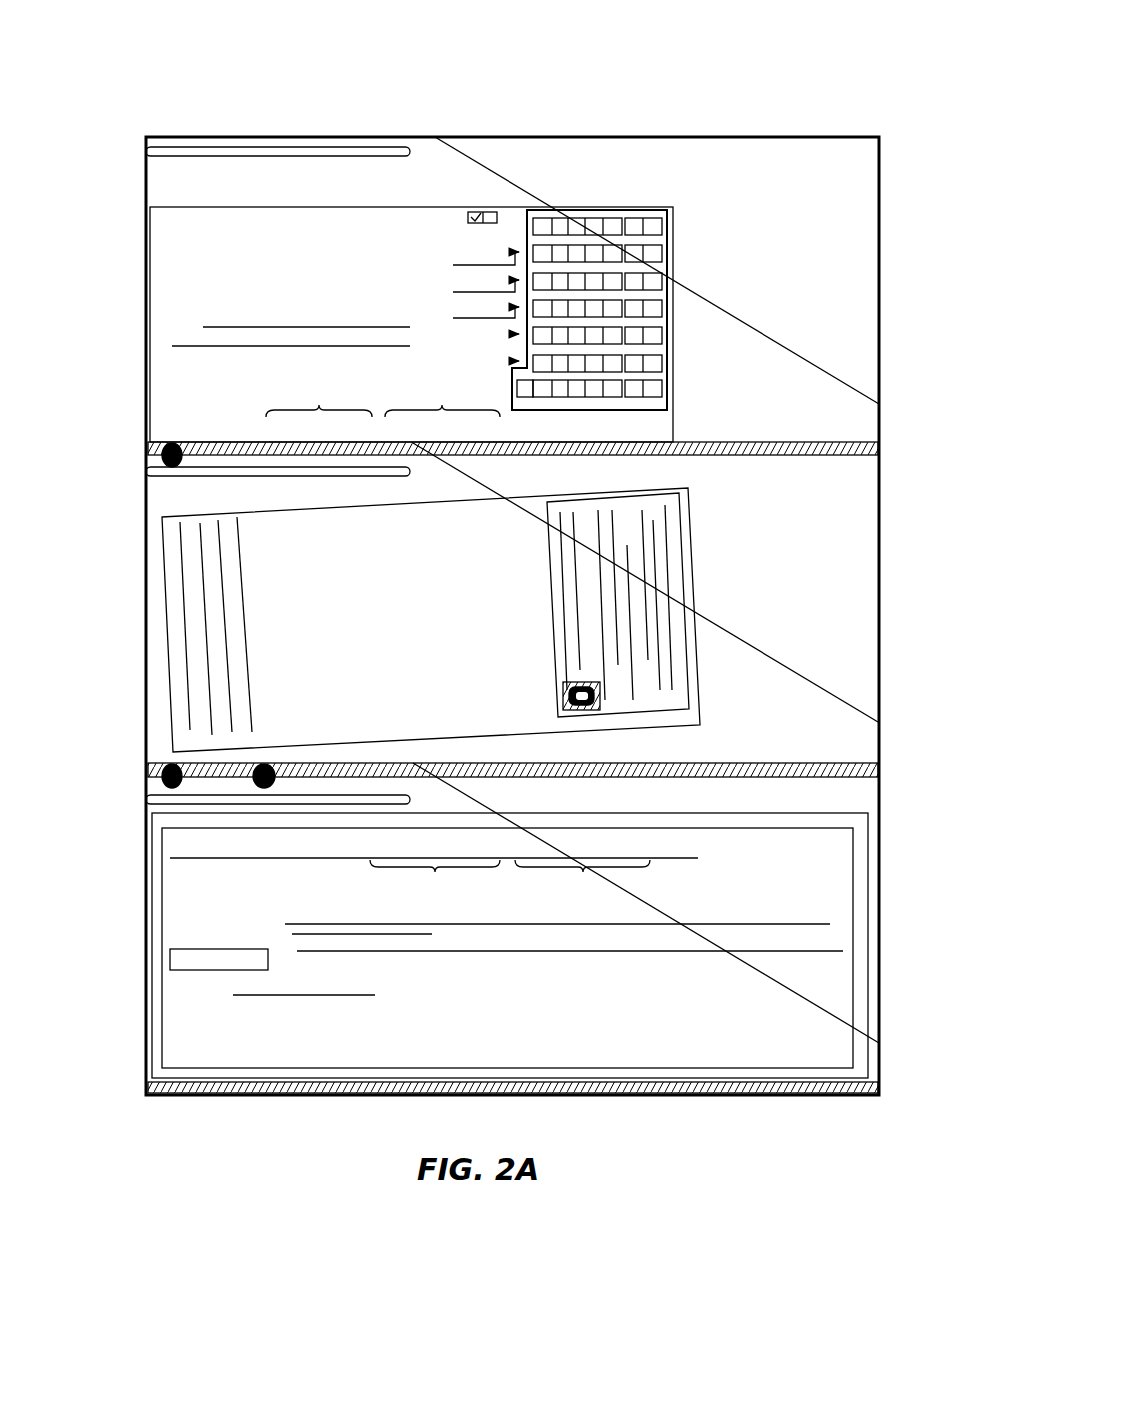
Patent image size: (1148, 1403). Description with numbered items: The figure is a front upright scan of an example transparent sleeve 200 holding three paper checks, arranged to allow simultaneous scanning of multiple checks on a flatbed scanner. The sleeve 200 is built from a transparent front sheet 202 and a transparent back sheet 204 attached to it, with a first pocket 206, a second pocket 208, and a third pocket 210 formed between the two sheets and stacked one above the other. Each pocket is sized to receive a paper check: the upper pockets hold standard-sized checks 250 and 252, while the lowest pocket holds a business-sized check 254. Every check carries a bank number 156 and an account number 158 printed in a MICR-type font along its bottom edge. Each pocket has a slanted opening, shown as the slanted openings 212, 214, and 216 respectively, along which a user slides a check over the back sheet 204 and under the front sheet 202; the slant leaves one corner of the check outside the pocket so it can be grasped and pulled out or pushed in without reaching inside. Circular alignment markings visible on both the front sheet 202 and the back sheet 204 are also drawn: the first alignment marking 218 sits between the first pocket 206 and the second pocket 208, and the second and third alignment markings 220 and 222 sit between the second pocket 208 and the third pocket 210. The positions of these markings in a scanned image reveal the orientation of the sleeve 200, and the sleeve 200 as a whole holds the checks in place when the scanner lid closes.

The transparent sleeve 200 is at (669, 98).
The transparent front sheet 202 is at (755, 367).
The transparent back sheet 204 is at (775, 160).
The first pocket 206 is at (313, 174).
The second pocket 208 is at (212, 498).
The third pocket 210 is at (212, 806).
The slanted opening 212 is at (690, 275).
The slanted opening 214 is at (709, 603).
The slanted opening 216 is at (658, 896).
The first alignment marking 218 is at (160, 458).
The second alignment marking 220 is at (162, 782).
The third alignment marking 222 is at (262, 776).
The standard-sized check 250 is at (643, 211).
The standard-sized check 252 is at (668, 490).
The business-sized check 254 is at (774, 813).
The bank number 156 is at (458, 641).
The account number 158 is at (435, 641).